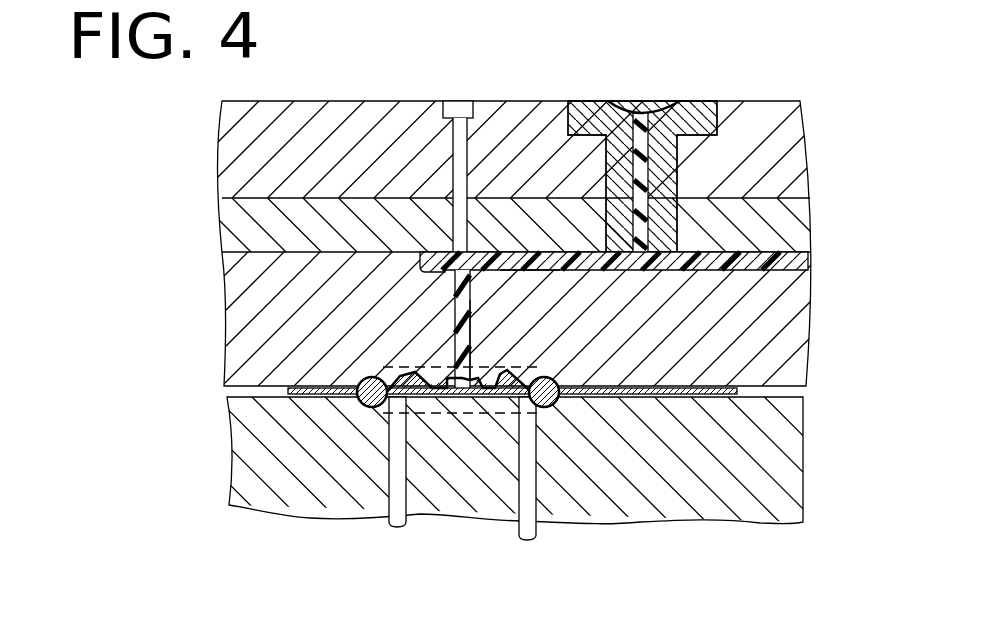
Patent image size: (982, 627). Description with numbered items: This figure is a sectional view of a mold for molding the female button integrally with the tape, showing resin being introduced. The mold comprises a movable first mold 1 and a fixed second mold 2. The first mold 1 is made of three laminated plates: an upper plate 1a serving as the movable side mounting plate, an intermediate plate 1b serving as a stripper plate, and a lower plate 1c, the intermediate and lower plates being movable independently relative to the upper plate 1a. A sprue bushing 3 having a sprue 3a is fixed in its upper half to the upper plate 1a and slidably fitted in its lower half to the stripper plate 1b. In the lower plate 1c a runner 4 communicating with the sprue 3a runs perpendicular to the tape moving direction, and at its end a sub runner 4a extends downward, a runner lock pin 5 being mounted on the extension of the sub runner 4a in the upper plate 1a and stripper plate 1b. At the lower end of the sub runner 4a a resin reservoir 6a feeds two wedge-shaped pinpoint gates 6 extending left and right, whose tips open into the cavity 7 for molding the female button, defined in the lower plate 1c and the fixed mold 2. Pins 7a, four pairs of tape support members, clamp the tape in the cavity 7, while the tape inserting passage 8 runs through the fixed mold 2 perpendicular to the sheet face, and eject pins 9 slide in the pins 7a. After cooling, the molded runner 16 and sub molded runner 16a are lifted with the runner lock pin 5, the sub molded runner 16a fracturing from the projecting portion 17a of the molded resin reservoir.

The first mold 1 is at (123, 100).
The upper plate 1a is at (225, 141).
The intermediate plate 1b is at (223, 224).
The lower plate 1c is at (250, 350).
The second mold 2 is at (123, 393).
The sprue bushing 3 is at (593, 99).
The sprue 3a is at (660, 99).
The runner 4 is at (805, 258).
The sub runner 4a is at (455, 330).
The runner lock pin 5 is at (453, 148).
The gate 6 is at (440, 393).
The resin reservoir 6a is at (506, 396).
The cavity 7 is at (373, 402).
The pins 7a is at (556, 408).
The tape inserting passage 8 is at (245, 396).
The eject pins 9 is at (537, 522).
The molded runner 16 is at (537, 272).
The sub molded runner 16a is at (472, 337).
The projecting portion 17a is at (458, 396).